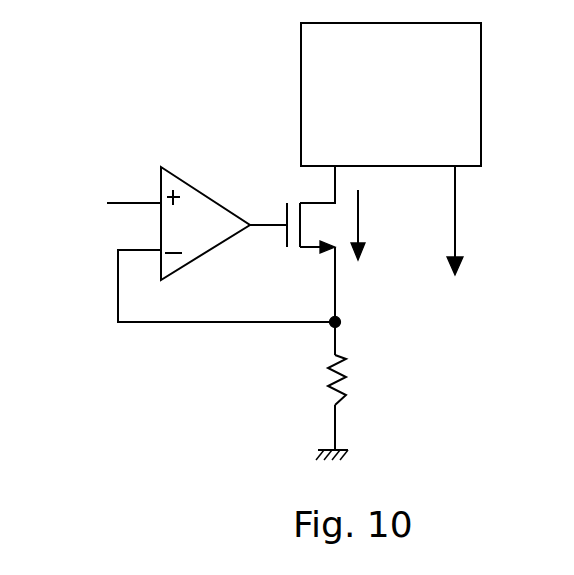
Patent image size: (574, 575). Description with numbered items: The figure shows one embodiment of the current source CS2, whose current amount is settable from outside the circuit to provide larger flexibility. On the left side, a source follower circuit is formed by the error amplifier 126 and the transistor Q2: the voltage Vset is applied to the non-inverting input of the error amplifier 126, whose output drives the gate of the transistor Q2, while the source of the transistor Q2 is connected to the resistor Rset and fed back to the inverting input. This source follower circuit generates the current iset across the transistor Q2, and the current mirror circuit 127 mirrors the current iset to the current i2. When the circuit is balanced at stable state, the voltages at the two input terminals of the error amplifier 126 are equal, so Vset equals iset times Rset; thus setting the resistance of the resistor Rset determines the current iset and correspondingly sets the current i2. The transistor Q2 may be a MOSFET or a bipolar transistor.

The error amplifier 126 is at (210, 250).
The current mirror circuit 127 is at (367, 155).
The transistor Q2 is at (311, 244).
The resistor Rset is at (371, 391).
The voltage Vset is at (97, 201).
The current iset is at (382, 225).
The current i2 is at (472, 220).
The current source CS2 is at (170, 453).